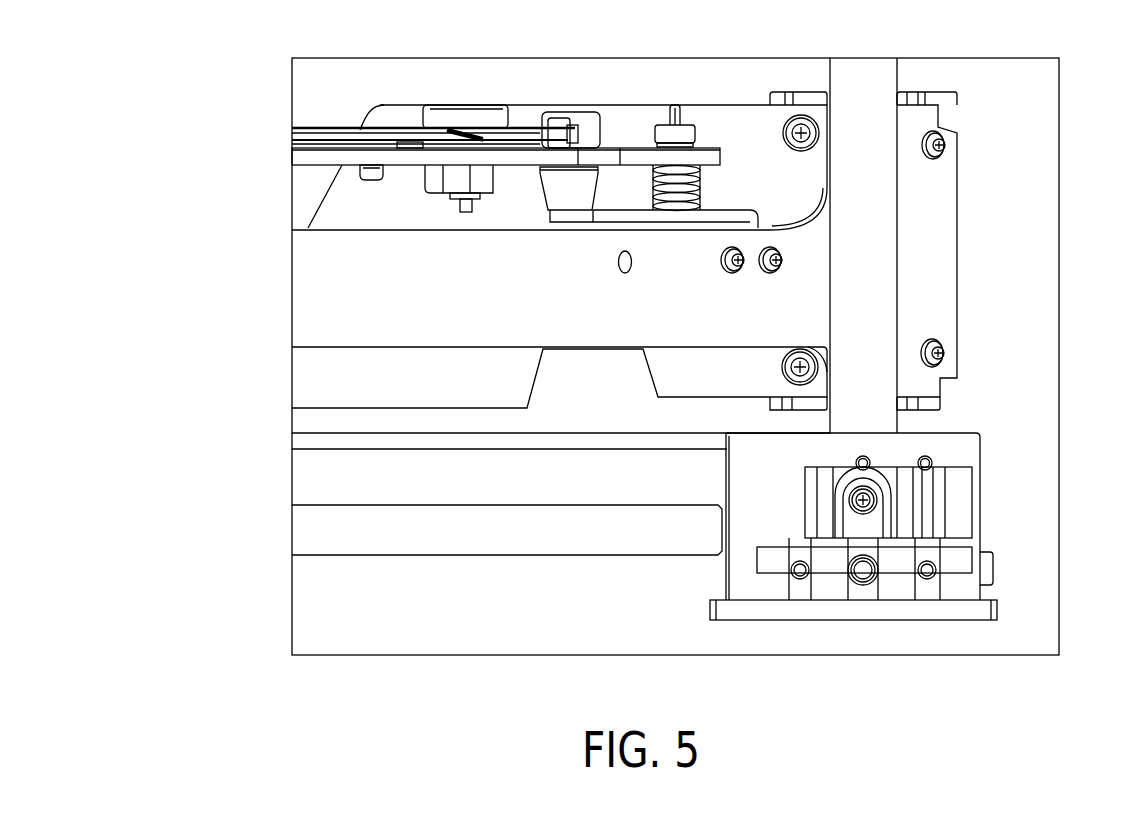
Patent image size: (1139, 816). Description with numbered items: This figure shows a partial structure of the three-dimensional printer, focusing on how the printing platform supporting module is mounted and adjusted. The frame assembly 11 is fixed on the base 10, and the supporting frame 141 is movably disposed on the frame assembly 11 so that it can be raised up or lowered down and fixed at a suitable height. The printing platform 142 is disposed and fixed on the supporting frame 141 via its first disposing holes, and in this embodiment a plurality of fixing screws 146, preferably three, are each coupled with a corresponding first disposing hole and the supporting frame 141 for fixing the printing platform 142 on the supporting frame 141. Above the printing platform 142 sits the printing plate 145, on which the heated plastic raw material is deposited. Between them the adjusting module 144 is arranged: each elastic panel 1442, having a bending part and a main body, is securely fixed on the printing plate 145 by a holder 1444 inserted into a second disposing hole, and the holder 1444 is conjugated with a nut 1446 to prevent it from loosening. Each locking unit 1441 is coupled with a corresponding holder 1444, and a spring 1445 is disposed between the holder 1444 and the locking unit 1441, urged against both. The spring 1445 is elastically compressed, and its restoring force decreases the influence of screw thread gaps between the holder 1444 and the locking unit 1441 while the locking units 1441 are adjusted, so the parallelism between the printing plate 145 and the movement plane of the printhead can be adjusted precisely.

The base 10 is at (907, 450).
The frame assembly 11 is at (870, 207).
The supporting frame 141 is at (370, 308).
The printing platform 142 is at (640, 155).
The adjusting module 144 is at (152, 68).
The locking unit 1441 is at (483, 138).
The elastic panel 1442 is at (392, 140).
The holder 1444 is at (462, 192).
The spring 1445 is at (427, 117).
The nut 1446 is at (455, 177).
The printing plate 145 is at (520, 135).
The fixing screw 146 is at (675, 132).